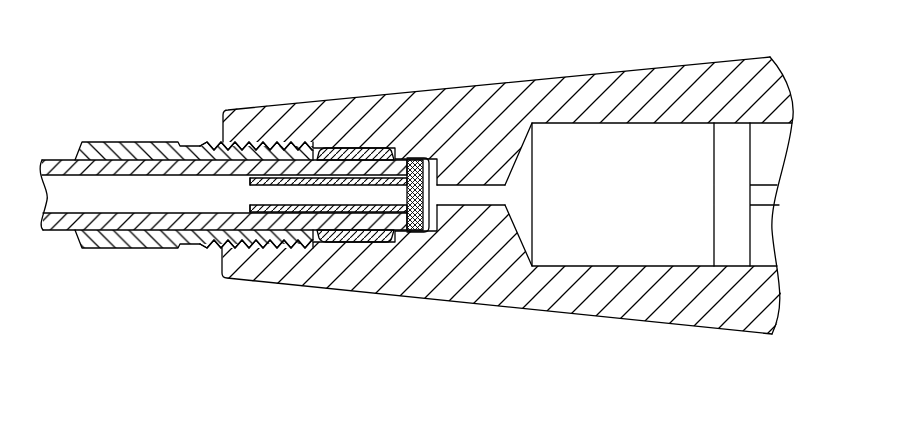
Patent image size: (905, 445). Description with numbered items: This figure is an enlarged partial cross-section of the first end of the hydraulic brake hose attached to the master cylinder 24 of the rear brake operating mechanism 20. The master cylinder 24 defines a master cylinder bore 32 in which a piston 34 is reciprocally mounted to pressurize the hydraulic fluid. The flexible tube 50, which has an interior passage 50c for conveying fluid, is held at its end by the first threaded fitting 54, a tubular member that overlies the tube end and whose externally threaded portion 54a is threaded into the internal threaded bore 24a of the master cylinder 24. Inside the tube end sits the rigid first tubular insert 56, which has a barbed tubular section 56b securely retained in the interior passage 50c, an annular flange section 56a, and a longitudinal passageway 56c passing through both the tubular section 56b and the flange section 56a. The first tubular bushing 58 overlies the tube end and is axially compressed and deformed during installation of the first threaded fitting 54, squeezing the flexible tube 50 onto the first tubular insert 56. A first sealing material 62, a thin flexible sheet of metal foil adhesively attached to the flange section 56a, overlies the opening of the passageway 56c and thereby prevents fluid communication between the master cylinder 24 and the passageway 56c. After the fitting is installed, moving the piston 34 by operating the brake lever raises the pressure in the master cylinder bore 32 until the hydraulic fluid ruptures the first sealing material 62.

The rear brake operating mechanism 20 is at (462, 78).
The master cylinder 24 is at (720, 303).
The internal threaded bore 24a is at (300, 142).
The master cylinder bore 32 is at (582, 123).
The piston 34 is at (730, 230).
The flexible tube 50 is at (54, 151).
The interior passage 50c is at (148, 230).
The first threaded fitting 54 is at (138, 133).
The externally threaded portion 54a is at (253, 248).
The first tubular insert 56 is at (398, 169).
The annular flange section 56a is at (430, 212).
The tubular section 56b is at (340, 213).
The longitudinal passageway 56c is at (258, 196).
The first tubular bushing 58 is at (366, 138).
The first sealing material 62 is at (483, 205).